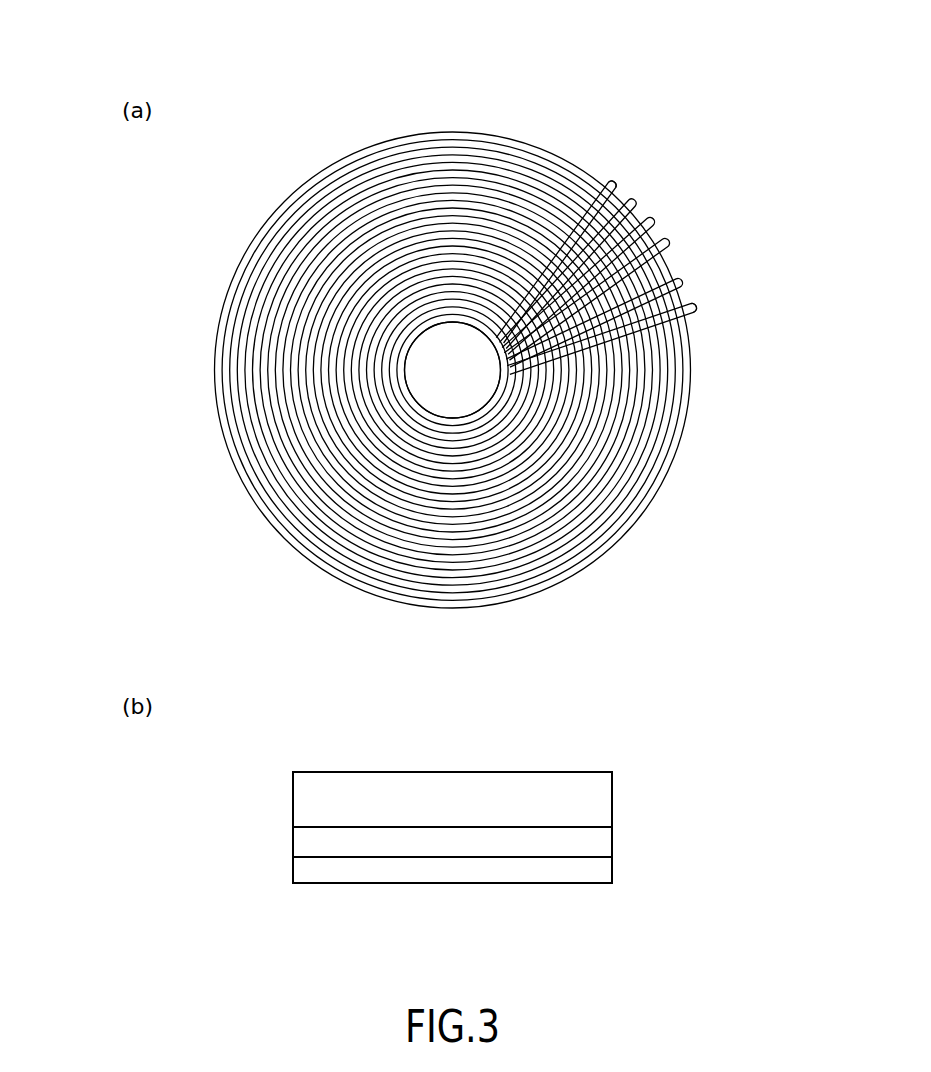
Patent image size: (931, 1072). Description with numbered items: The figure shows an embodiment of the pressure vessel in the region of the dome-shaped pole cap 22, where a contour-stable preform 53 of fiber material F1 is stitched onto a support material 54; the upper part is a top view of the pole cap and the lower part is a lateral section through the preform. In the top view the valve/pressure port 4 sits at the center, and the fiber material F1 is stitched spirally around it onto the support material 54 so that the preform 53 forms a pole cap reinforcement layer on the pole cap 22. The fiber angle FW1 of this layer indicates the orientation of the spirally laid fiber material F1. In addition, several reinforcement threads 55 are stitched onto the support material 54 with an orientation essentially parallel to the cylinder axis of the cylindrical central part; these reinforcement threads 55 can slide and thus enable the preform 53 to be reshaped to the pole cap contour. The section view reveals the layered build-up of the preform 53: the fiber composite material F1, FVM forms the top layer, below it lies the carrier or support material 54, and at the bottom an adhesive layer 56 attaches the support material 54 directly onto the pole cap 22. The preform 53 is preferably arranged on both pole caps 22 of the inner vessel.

The dome-shaped pole cap 22 is at (277, 558).
The valve/pressure port 4 is at (458, 381).
The contour-stable preform 53 is at (523, 494).
The fiber material of the pole cap reinforcement layer F1 is at (371, 799).
The fiber angle in the pole cap reinforcement layer FW1 is at (558, 185).
The reinforcement threads 55 is at (641, 221).
The fiber composite material FVM is at (292, 800).
The support material 54 is at (292, 843).
The adhesive layer 56 is at (292, 865).